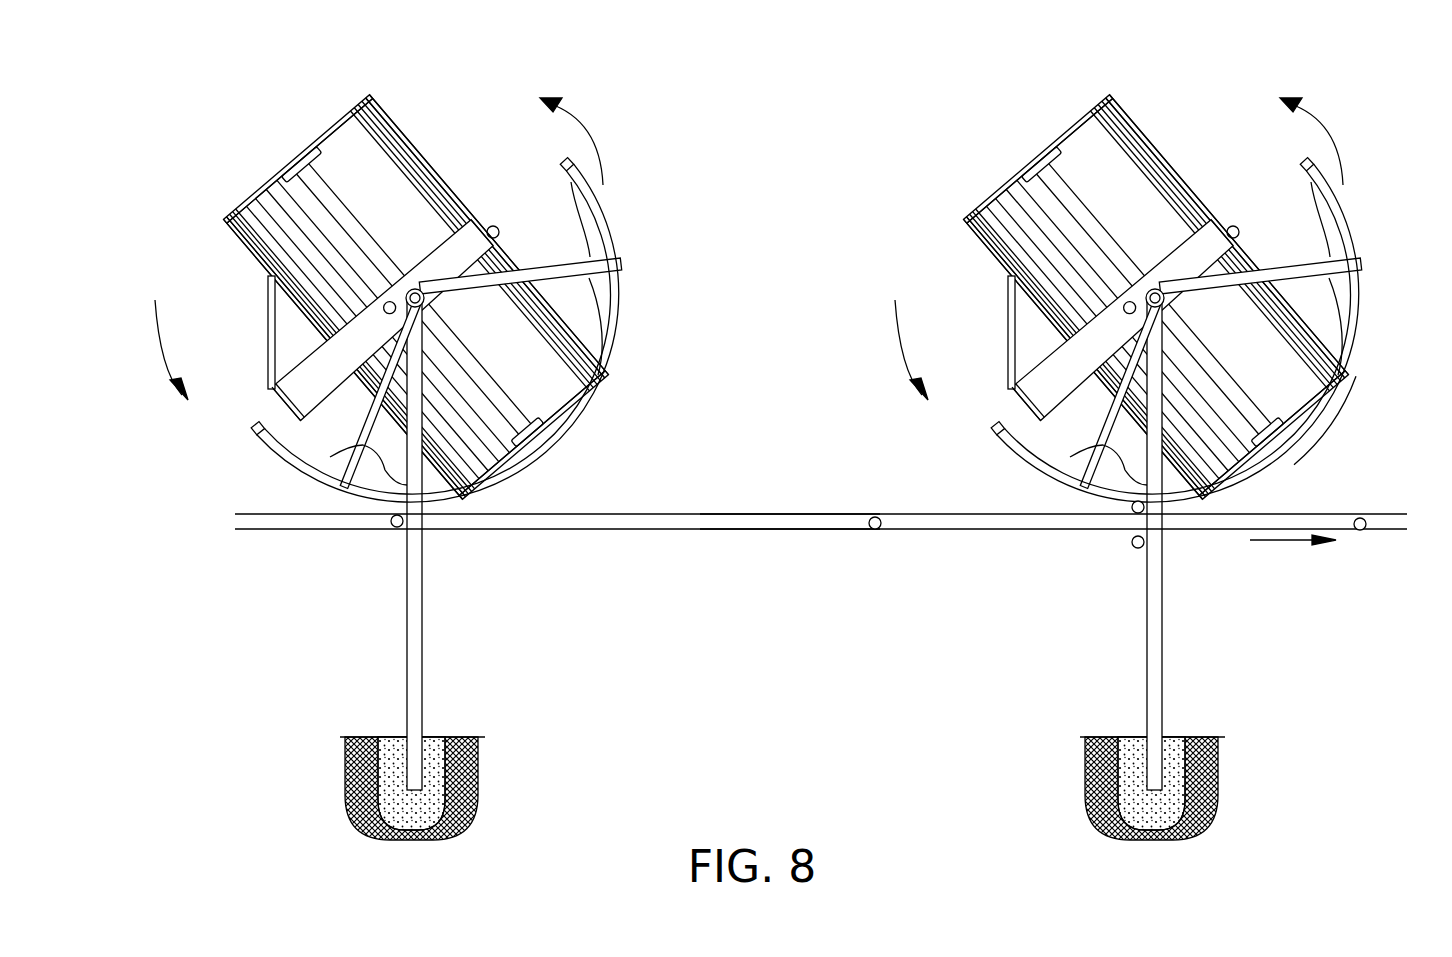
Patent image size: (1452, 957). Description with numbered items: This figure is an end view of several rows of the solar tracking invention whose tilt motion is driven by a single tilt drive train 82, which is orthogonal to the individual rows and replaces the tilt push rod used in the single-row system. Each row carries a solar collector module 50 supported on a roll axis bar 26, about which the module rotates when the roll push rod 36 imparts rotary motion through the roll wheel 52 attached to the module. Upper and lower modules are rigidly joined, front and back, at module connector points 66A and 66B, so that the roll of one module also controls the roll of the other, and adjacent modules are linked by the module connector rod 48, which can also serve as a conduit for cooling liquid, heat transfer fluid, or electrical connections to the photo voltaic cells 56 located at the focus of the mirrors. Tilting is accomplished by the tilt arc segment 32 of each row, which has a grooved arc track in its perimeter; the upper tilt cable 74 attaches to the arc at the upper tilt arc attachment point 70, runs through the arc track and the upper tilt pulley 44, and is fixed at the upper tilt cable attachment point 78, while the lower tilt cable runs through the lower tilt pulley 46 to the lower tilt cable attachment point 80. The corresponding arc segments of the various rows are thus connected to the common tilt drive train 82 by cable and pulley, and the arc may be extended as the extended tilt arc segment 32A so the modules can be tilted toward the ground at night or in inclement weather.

The roll axis bar 26 is at (322, 172).
The tilt arc segment 32 is at (315, 519).
The extended tilt arc segment 32A is at (633, 254).
The roll push rod 36 is at (387, 313).
The upper tilt pulley 44 is at (1143, 512).
The lower tilt pulley 46 is at (1135, 546).
The module connector rod 48 is at (499, 233).
The solar collector module 50 is at (243, 243).
The roll wheel 52 is at (415, 287).
The photo voltaic cells 56 is at (392, 108).
The module connector point 66A is at (271, 399).
The module connector point 66B is at (487, 218).
The upper tilt arc attachment point 70 is at (584, 170).
The upper tilt cable 74 is at (1340, 427).
The upper tilt cable attachment point 78 is at (880, 527).
The lower tilt cable attachment point 80 is at (1361, 531).
The tilt drive train 82 is at (790, 518).